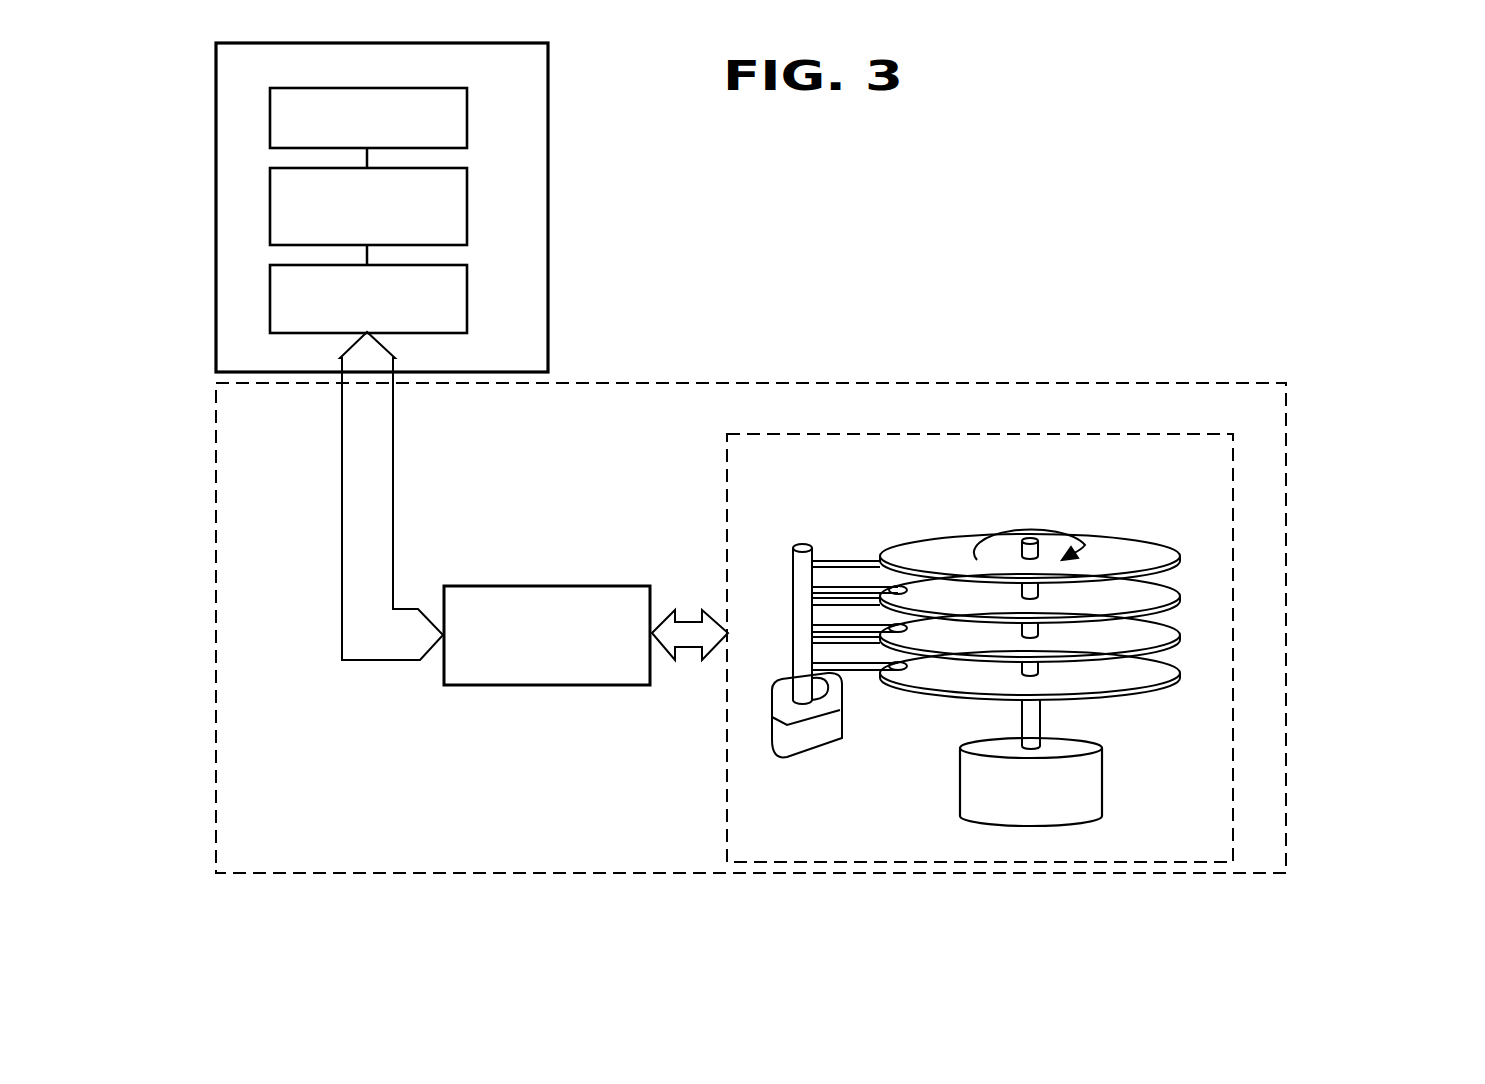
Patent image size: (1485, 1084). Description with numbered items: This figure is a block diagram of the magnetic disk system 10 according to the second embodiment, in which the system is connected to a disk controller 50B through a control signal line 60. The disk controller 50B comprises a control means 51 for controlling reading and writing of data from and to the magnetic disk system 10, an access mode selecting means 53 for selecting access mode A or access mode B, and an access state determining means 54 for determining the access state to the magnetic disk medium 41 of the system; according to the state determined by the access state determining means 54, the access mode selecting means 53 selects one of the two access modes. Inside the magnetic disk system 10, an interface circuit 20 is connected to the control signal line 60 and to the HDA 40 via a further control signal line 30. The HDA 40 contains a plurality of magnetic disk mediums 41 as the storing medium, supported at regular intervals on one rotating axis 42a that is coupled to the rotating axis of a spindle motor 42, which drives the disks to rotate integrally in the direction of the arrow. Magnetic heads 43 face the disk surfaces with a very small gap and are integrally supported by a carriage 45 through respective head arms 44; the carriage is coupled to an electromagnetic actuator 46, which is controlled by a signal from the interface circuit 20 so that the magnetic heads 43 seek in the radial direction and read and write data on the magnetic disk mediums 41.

The disk controller 50B is at (548, 50).
The control means 51 is at (467, 112).
The access mode selecting means 53 is at (467, 195).
The access state determining means 54 is at (467, 288).
The magnetic disk system 10 is at (613, 383).
The control signal line 60 is at (375, 650).
The interface circuit 20 is at (523, 583).
The control signal line 30 is at (685, 643).
The HDA (Head Disk Assembly) 40 is at (783, 433).
The carriage 45 is at (803, 544).
The head arm 44 is at (850, 560).
The magnetic head 43 is at (893, 683).
The magnetic disk medium 41 is at (1178, 556).
The rotating axis 42a is at (1037, 722).
The spindle motor 42 is at (1102, 780).
The electromagnetic actuator 46 is at (798, 743).